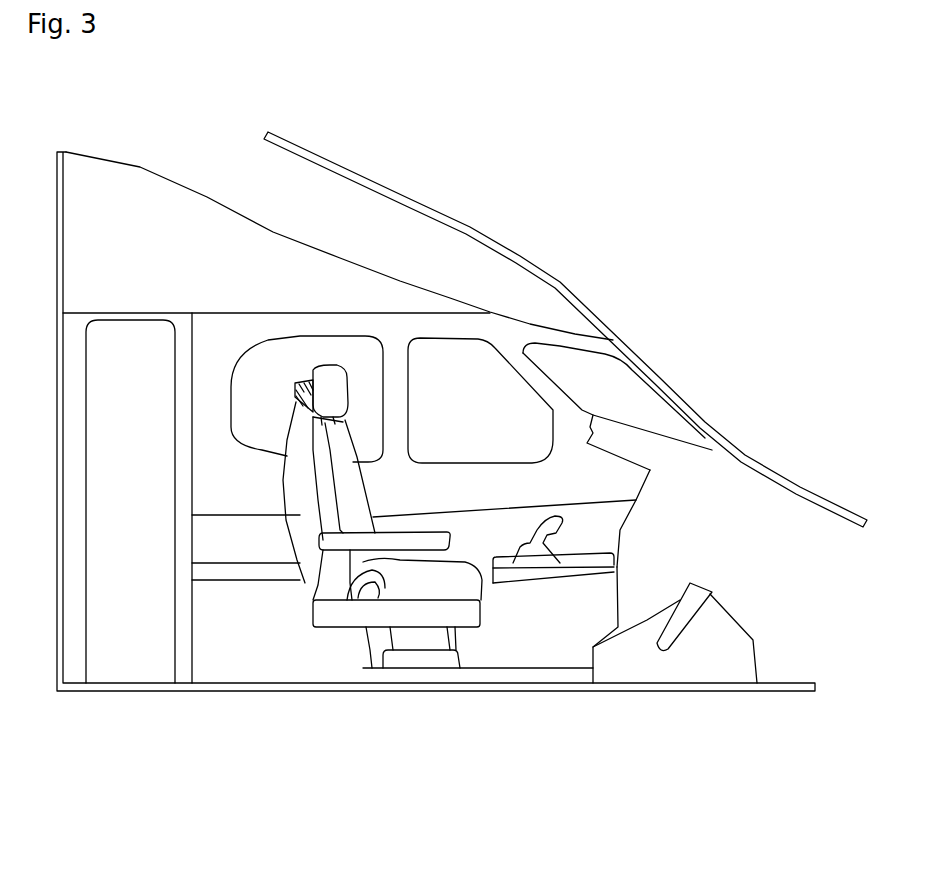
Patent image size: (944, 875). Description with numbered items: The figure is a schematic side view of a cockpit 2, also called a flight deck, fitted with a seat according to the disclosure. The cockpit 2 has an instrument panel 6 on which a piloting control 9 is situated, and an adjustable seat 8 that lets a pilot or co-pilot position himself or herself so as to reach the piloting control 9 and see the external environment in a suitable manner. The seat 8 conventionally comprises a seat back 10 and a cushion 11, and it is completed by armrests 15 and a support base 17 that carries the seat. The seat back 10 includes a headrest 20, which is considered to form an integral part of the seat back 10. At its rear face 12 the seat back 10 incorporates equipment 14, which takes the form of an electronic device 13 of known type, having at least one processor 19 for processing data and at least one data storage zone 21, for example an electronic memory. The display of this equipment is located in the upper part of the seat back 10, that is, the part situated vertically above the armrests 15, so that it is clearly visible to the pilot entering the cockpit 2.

The cockpit 2 is at (539, 349).
The instrument panel 6 is at (700, 455).
The seat 8 is at (426, 400).
The piloting control 9 is at (667, 552).
The seat back 10 is at (254, 399).
The cushion 11 is at (397, 657).
The rear face 12 is at (212, 530).
The electronic device 13 is at (275, 254).
The equipment 14 is at (251, 422).
The armrest 15 is at (420, 538).
The support base 17 is at (431, 709).
The processor 19 is at (331, 263).
The headrest 20 is at (383, 322).
The data storage zone 21 is at (217, 350).